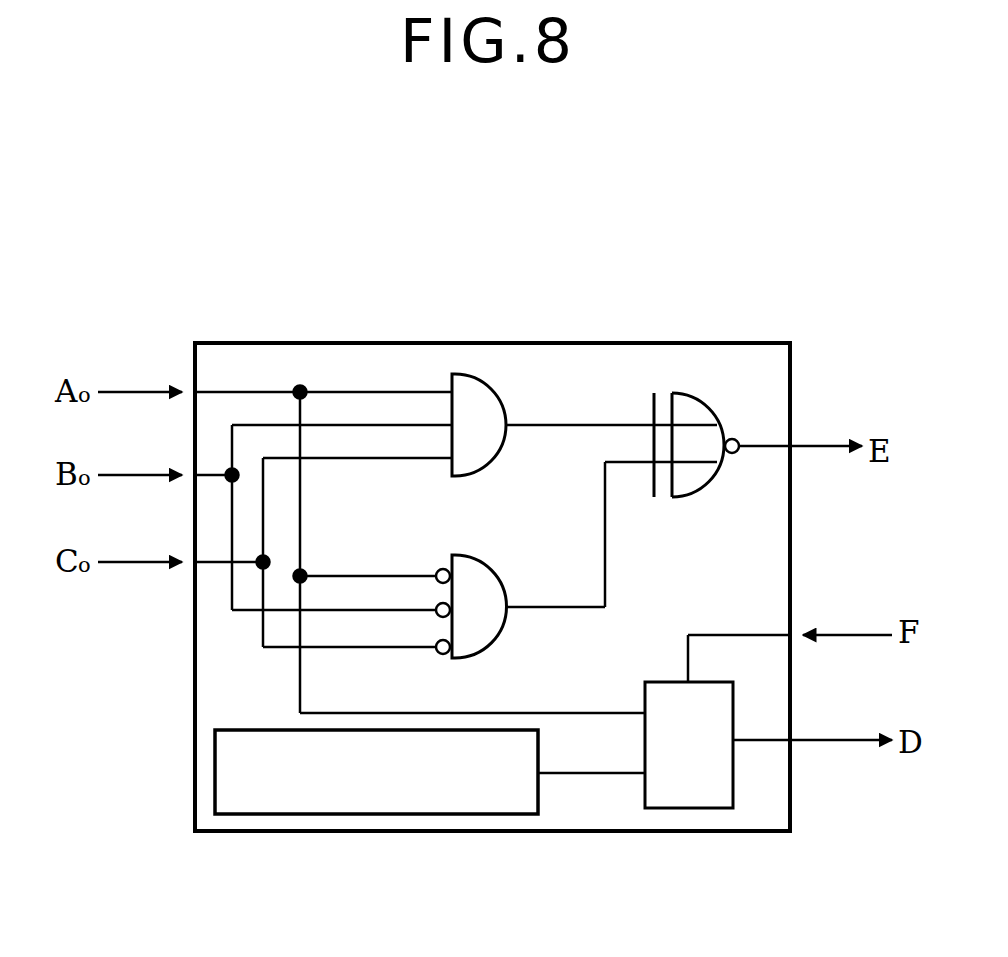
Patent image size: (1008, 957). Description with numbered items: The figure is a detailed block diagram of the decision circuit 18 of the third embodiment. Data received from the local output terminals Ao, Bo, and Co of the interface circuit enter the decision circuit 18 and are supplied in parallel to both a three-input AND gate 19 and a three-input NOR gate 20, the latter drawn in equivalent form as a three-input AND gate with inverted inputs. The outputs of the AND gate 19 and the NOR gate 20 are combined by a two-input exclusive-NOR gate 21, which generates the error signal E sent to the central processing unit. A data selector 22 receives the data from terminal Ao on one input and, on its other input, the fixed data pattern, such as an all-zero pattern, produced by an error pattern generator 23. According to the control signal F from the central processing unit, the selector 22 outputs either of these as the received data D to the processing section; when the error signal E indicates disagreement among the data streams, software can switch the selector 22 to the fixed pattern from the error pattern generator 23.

The decision circuit 18 is at (395, 343).
The three-input AND gate 19 is at (487, 388).
The three-input NOR gate 20 is at (489, 558).
The two-input exclusive-NOR gate 21 is at (703, 407).
The data selector 22 is at (690, 808).
The error pattern generator 23 is at (385, 814).